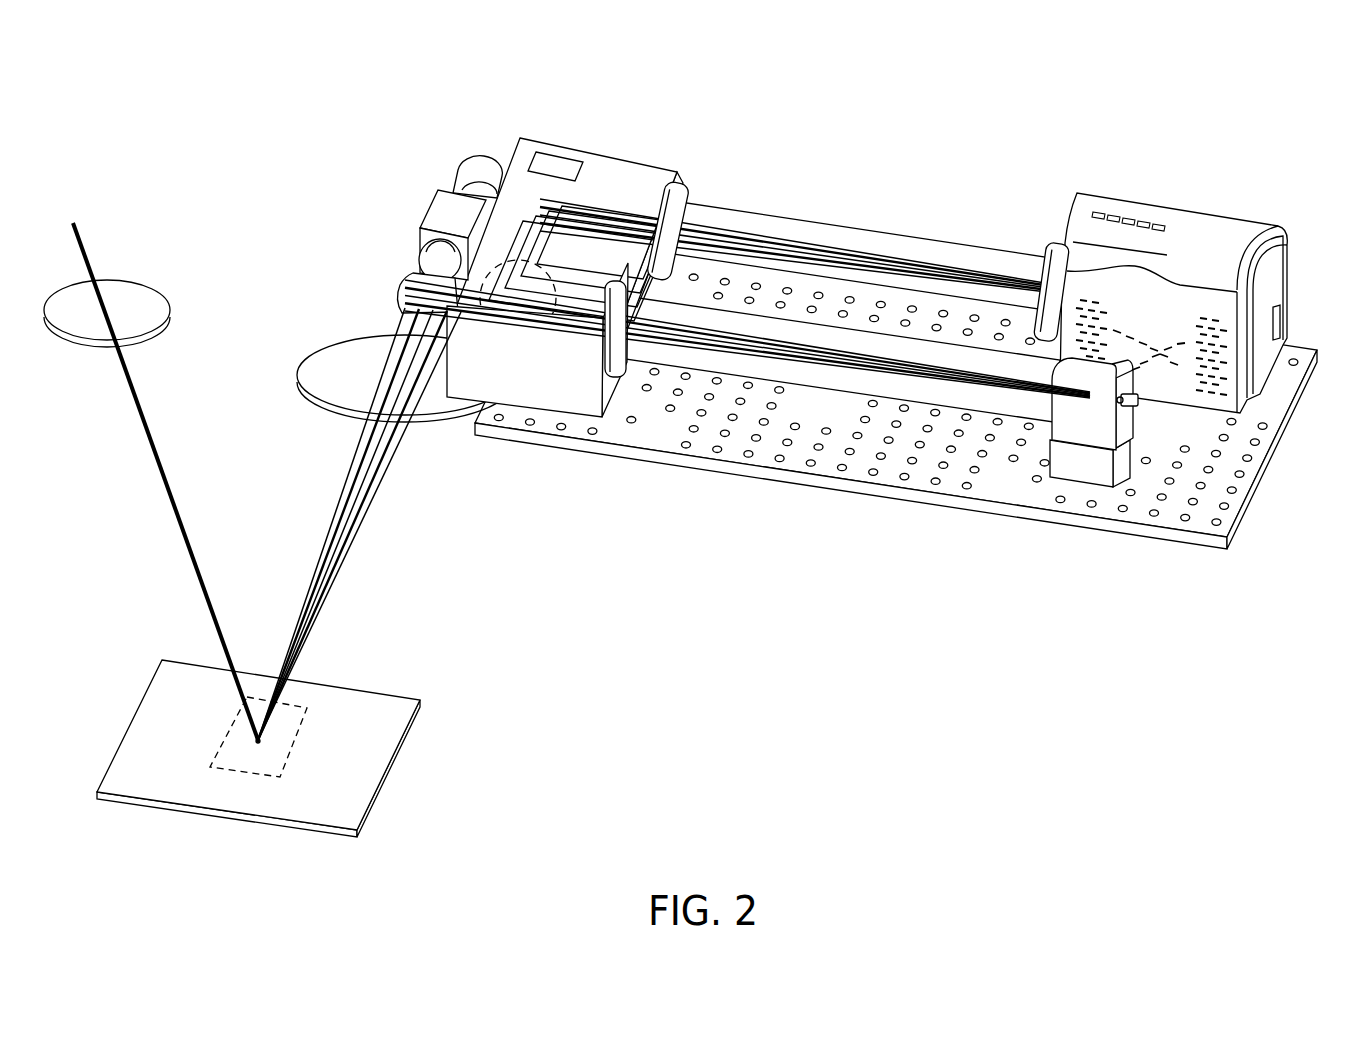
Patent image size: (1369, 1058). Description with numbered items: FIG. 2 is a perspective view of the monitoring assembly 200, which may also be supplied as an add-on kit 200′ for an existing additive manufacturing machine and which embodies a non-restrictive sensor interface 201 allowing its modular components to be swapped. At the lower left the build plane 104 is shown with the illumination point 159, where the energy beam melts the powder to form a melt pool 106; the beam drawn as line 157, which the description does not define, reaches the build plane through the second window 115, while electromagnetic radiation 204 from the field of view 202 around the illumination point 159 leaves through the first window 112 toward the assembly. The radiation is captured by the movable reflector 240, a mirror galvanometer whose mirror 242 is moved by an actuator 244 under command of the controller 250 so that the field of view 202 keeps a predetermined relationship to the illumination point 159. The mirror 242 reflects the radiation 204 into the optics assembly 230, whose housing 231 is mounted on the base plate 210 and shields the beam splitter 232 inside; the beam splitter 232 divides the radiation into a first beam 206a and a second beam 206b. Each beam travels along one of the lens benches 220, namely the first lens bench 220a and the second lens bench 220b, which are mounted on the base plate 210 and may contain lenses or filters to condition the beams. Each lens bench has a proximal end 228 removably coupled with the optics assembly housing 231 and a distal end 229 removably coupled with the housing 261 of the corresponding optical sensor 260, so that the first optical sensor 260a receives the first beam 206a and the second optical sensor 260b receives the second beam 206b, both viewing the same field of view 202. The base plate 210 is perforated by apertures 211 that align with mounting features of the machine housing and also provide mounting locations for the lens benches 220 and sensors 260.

The build plane 104 is at (136, 706).
The melt pool 106 is at (268, 752).
The first window 112 is at (305, 388).
The second window 115 is at (136, 277).
The laser beam 157 is at (152, 428).
The illumination point 159 is at (250, 745).
The monitoring assembly 200 is at (532, 60).
The add-on kit 200′ is at (987, 122).
The non-restrictive sensor interface 201 is at (1140, 95).
The field of view 202 is at (306, 741).
The electromagnetic radiation 204 is at (346, 560).
The first beam 206a is at (864, 246).
The second beam 206b is at (842, 368).
The base plate 210 is at (1235, 540).
The apertures 211 is at (1240, 487).
The lens benches 220 is at (842, 295).
The first lens bench 220a is at (736, 214).
The second lens bench 220b is at (800, 318).
The proximal end 228 is at (639, 380).
The distal end 229 is at (1030, 437).
The optics assembly 230 is at (529, 375).
The housing 231 is at (573, 403).
The beam splitter 232 is at (548, 290).
The movable reflector 240 is at (419, 207).
The mirror 242 is at (418, 297).
The actuator 244 is at (422, 208).
The controller 250 is at (567, 231).
The optical sensors 260 is at (1212, 278).
The first optical sensor 260a is at (1284, 280).
The second optical sensor 260b is at (1137, 415).
The housing 261 is at (1124, 422).